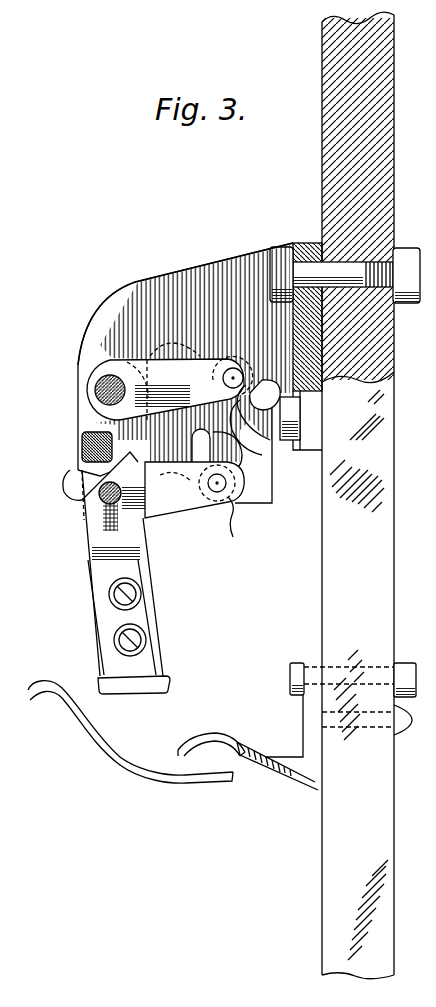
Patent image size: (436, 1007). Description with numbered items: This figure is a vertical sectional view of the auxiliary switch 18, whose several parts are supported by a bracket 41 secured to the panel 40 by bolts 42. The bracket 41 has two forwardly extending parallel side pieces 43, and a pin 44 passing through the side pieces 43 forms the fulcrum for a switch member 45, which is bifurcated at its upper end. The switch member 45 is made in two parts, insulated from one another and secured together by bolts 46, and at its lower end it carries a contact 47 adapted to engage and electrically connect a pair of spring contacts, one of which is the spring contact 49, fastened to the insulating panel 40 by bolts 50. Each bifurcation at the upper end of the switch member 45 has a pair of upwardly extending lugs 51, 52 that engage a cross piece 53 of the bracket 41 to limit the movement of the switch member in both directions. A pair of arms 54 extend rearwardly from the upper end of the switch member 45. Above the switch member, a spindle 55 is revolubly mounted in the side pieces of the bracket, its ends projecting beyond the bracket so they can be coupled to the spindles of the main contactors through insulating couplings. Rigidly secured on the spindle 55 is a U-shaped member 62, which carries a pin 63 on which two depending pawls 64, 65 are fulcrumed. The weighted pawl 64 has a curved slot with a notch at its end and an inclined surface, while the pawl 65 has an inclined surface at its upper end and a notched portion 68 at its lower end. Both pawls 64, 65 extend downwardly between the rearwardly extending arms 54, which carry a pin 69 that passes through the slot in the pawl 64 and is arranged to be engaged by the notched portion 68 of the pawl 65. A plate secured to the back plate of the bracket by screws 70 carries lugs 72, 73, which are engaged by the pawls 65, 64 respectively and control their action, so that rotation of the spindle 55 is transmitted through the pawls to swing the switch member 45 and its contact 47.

The auxiliary switch 18 is at (168, 247).
The panel 40 is at (322, 64).
The bracket 41 is at (305, 243).
The bolts 42 is at (280, 258).
The side pieces 43 is at (153, 290).
The pin 44 is at (108, 494).
The switch member 45 is at (97, 577).
The bolts 46 is at (146, 586).
The contact 47 is at (168, 679).
The spring contact 49 is at (94, 738).
The bolts 50 is at (299, 663).
The lug 51 is at (82, 474).
The lug 52 is at (97, 478).
The cross piece 53 is at (95, 438).
The arms 54 is at (198, 500).
The spindle 55 is at (112, 380).
The U-shaped member 62 is at (163, 360).
The pin 63 is at (233, 377).
The pawl 64 is at (207, 449).
The pawl 65 is at (272, 481).
The notched portion 68 is at (236, 528).
The pin 69 is at (224, 488).
The screws 70 is at (266, 408).
The lug 72 is at (249, 427).
The lug 73 is at (256, 384).